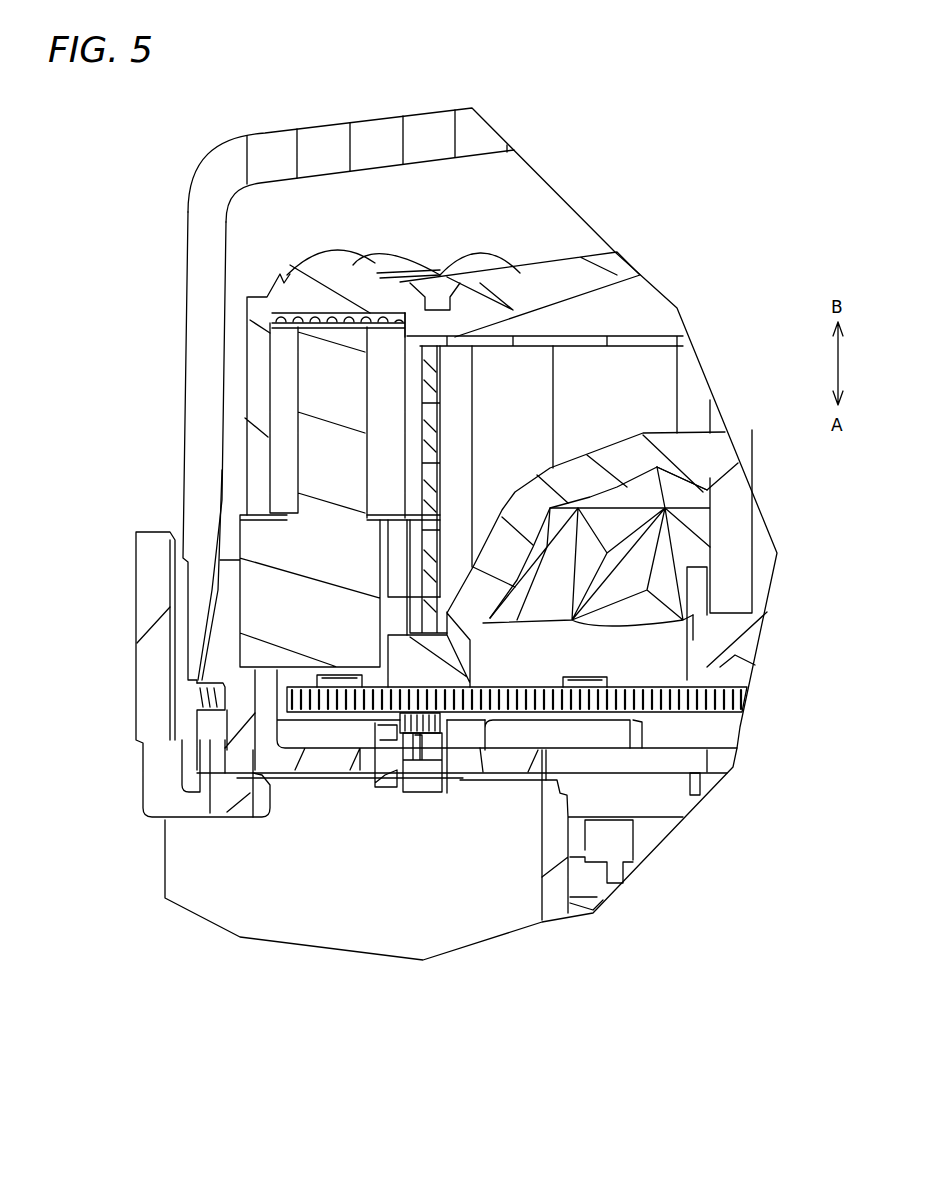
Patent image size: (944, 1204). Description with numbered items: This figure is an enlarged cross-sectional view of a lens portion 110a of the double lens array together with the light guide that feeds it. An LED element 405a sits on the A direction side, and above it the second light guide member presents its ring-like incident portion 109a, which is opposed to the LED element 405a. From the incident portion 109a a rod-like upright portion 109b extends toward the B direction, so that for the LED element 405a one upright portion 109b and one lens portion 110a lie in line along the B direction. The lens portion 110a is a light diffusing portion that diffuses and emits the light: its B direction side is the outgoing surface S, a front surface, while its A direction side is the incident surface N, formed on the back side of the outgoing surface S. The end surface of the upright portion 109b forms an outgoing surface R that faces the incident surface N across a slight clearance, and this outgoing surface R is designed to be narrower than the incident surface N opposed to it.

The incident portion 109a is at (280, 613).
The upright portion 109b is at (323, 463).
The lens portion 110a is at (374, 231).
The LED element 405a is at (333, 690).
The outgoing surface S is at (340, 253).
The incident surface N is at (330, 308).
The outgoing surface R is at (338, 340).